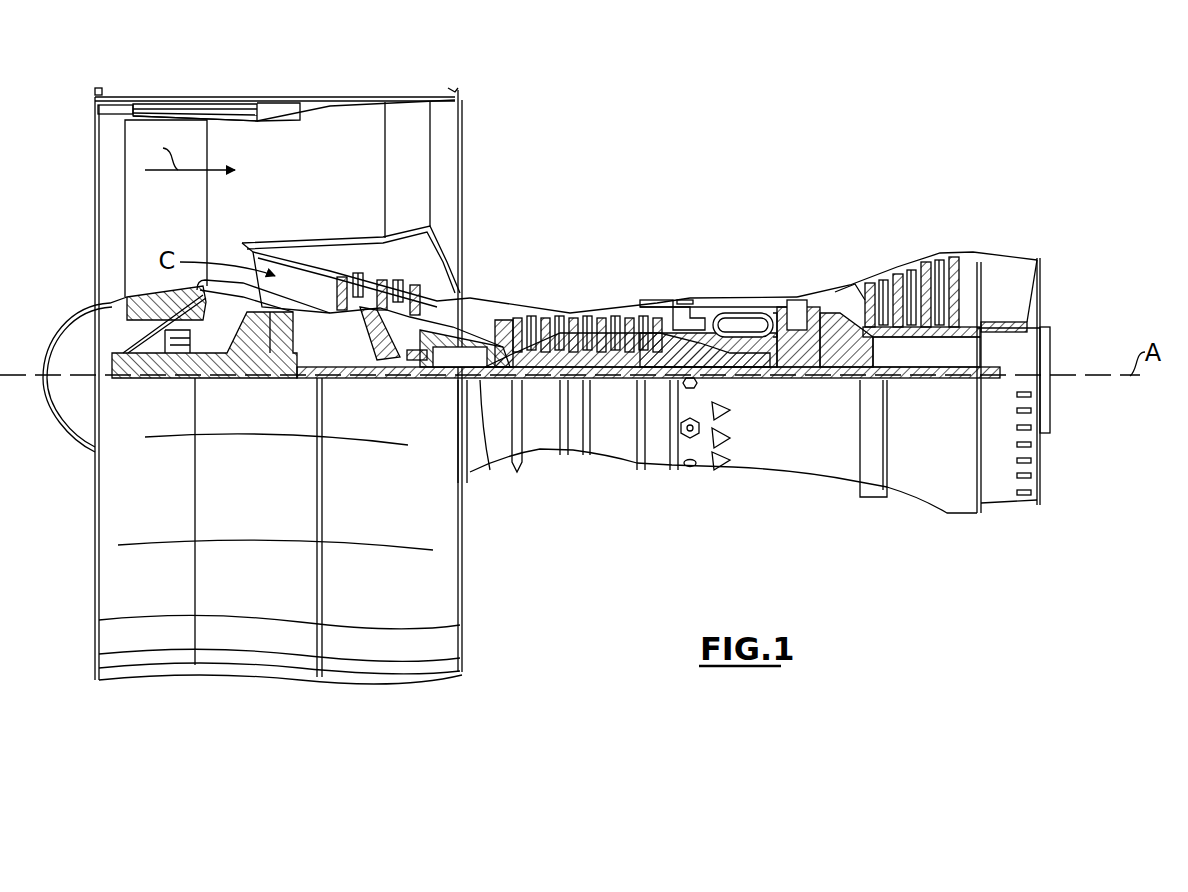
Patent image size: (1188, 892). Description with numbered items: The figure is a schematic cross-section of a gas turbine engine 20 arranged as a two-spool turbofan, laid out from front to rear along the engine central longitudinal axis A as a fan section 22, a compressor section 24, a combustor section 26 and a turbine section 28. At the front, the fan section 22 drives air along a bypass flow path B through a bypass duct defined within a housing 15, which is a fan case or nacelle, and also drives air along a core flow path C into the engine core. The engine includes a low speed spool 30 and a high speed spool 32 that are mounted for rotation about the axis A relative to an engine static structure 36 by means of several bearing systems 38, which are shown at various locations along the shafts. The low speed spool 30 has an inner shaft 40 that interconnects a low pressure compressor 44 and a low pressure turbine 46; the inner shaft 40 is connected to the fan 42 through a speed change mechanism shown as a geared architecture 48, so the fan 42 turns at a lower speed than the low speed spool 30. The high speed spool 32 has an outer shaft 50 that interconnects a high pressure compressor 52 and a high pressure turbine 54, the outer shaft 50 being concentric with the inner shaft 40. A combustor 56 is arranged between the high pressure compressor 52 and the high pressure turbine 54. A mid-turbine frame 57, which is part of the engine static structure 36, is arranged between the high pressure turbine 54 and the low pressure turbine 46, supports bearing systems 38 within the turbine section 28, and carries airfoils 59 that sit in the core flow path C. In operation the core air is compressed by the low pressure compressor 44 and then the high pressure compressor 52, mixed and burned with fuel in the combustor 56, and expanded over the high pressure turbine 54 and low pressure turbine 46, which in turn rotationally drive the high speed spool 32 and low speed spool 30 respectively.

The housing 15 is at (277, 100).
The gas turbine engine 20 is at (742, 147).
The fan section 22 is at (205, 88).
The compressor section 24 is at (510, 287).
The combustor section 26 is at (738, 278).
The turbine section 28 is at (880, 235).
The low speed spool 30 is at (616, 395).
The high speed spool 32 is at (663, 320).
The engine static structure 36 is at (655, 482).
The bearing systems 38 is at (415, 365).
The inner shaft 40 is at (481, 385).
The fan 42 is at (152, 224).
The low pressure compressor 44 is at (378, 290).
The low pressure turbine 46 is at (922, 272).
The geared architecture 48 is at (285, 360).
The outer shaft 50 is at (732, 365).
The high pressure compressor 52 is at (578, 318).
The high pressure turbine 54 is at (797, 300).
The combustor 56 is at (750, 323).
The mid-turbine frame 57 is at (845, 290).
The airfoils 59 is at (838, 315).